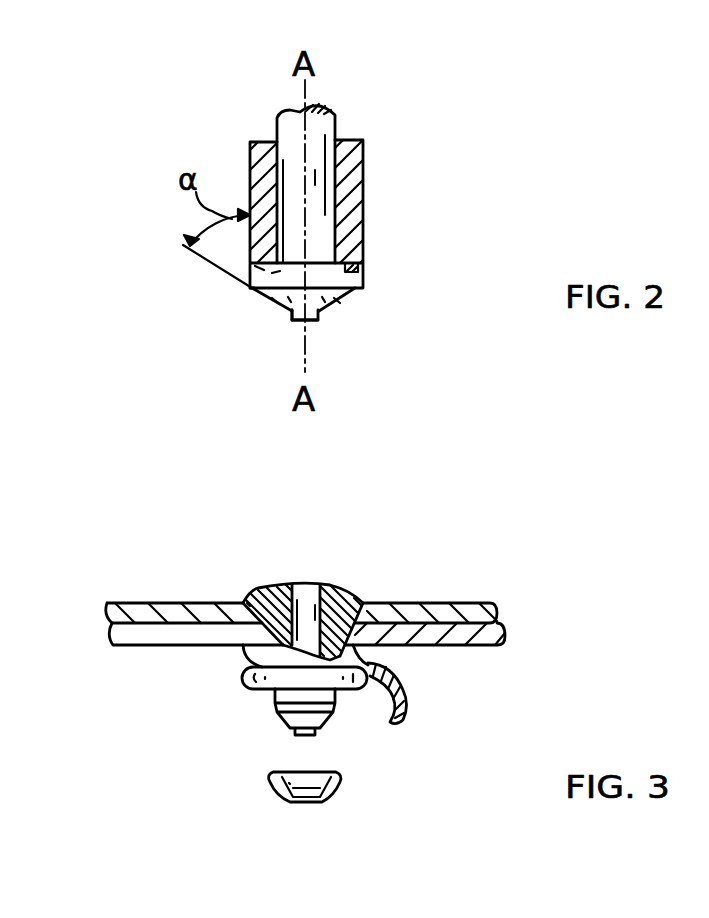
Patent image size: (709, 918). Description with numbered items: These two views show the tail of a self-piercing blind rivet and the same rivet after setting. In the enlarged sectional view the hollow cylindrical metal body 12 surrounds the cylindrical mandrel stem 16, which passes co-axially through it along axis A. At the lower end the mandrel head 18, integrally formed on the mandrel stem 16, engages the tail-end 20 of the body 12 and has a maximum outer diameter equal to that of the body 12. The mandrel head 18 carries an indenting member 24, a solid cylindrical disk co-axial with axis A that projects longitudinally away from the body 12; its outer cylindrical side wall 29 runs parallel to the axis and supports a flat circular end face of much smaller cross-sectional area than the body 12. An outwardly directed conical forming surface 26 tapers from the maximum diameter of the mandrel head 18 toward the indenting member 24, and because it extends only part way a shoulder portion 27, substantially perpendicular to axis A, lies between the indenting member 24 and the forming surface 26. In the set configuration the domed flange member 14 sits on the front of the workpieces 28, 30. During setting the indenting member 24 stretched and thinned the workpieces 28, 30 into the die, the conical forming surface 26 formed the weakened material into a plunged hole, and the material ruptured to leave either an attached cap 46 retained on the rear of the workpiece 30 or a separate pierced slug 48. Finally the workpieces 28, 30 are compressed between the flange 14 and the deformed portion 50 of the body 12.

In FIG. 2, the cylindrical metal body 12 is at (365, 190).
In FIG. 2, the mandrel stem 16 is at (322, 137).
In FIG. 3, the mandrel stem 16 is at (303, 585).
In FIG. 2, the mandrel head 18 is at (272, 278).
In FIG. 2, the tail-end 20 is at (363, 268).
In FIG. 2, the indenting member 24 is at (320, 320).
In FIG. 2, the conical forming surface 26 is at (347, 301).
In FIG. 2, the shoulder portion 27 is at (291, 320).
In FIG. 2, the outer cylindrical side wall 29 is at (320, 316).
In FIG. 3, the domed flange member 14 is at (342, 590).
In FIG. 3, the workpiece 28 is at (478, 614).
In FIG. 3, the workpiece 30 is at (497, 645).
In FIG. 3, the attached cap 46 is at (402, 721).
In FIG. 3, the pierced slug 48 is at (333, 788).
In FIG. 3, the deformed portion 50 is at (257, 683).